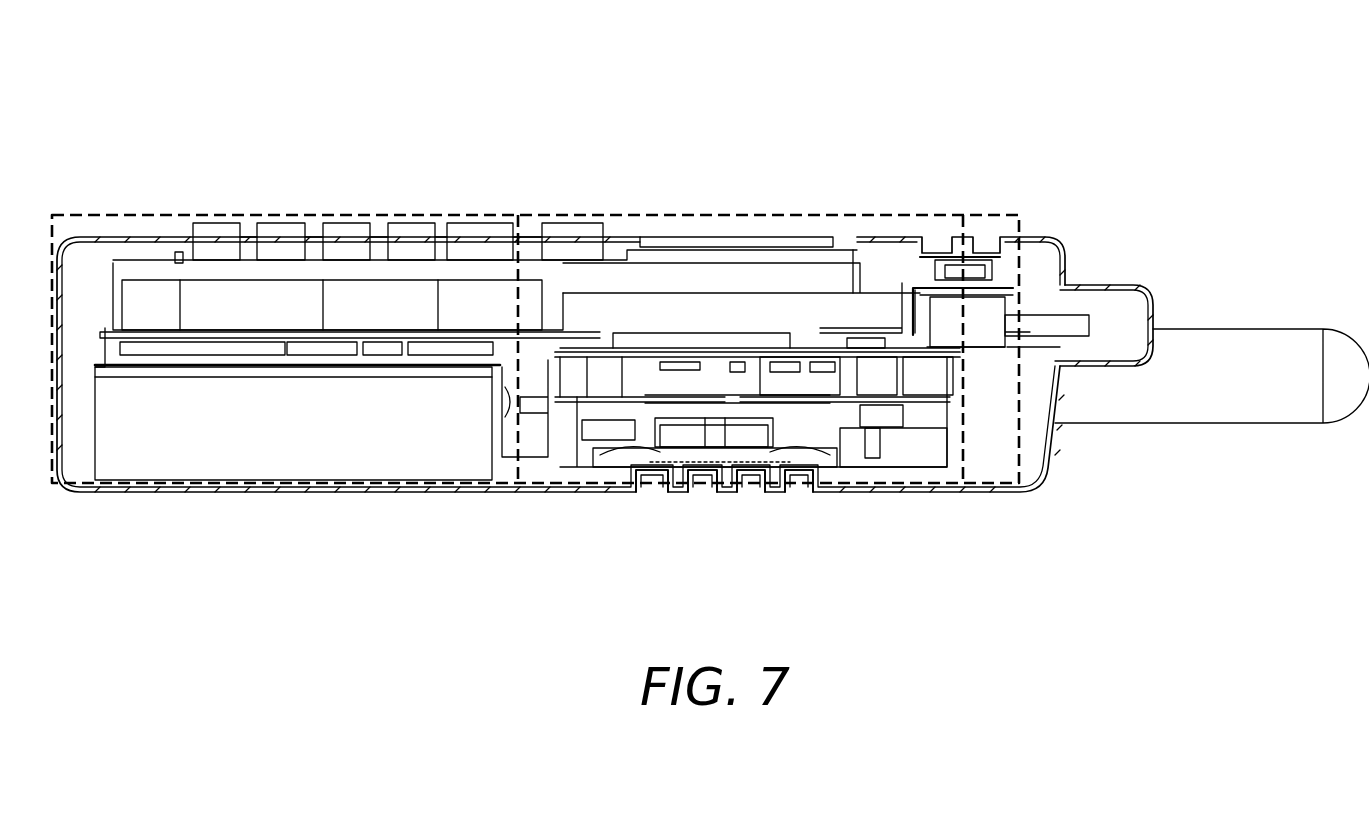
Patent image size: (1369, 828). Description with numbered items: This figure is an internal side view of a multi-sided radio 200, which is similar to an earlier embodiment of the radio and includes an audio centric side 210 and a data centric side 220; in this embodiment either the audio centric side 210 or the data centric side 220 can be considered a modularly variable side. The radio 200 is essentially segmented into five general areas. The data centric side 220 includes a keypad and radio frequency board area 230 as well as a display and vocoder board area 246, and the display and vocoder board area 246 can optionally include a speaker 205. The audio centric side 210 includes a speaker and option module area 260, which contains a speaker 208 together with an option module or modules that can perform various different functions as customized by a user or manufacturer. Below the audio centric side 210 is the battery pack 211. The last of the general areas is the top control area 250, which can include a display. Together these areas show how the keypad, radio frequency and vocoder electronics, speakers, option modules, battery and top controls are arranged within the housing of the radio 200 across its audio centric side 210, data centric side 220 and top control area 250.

The multi-sided radio 200 is at (558, 353).
The speaker 205 is at (925, 268).
The speaker 208 is at (669, 445).
The audio centric side 210 is at (796, 522).
The battery pack 211 is at (343, 458).
The data centric side 220 is at (803, 224).
The keypad and radio frequency (RF) board area 230 is at (343, 292).
The display and vocoder board area 246 is at (670, 335).
The top control area 250 is at (1092, 440).
The speaker and option module area 260 is at (717, 428).